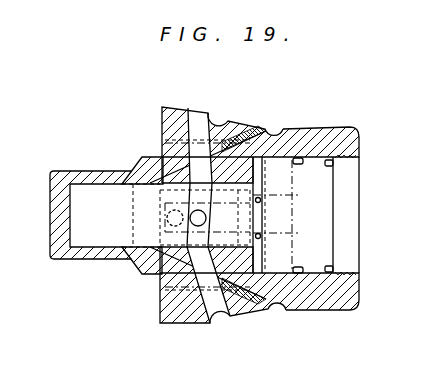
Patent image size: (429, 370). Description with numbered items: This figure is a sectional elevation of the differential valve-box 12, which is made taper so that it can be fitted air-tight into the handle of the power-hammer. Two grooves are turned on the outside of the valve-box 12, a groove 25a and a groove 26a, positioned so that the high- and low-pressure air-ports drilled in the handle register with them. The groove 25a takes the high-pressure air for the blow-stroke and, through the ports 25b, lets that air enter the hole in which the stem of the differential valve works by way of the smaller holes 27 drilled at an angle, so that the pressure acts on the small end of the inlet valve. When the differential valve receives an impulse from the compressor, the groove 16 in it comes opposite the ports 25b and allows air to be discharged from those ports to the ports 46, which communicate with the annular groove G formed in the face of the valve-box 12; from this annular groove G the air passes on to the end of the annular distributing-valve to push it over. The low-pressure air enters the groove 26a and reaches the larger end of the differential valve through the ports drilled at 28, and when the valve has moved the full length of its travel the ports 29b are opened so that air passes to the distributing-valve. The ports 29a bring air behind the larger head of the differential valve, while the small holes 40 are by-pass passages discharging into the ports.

The groove 16 is at (66, 215).
The angled holes 27 is at (135, 165).
The ports 25b is at (194, 293).
The groove 25a is at (222, 116).
The groove 26a is at (268, 131).
The ports 28 is at (302, 157).
The differential valve-box 12 is at (356, 139).
The by-pass passages 40 is at (334, 167).
The ports 29b is at (298, 168).
The ports 29a is at (260, 200).
The ports 46 is at (210, 221).
The annular groove G is at (240, 214).